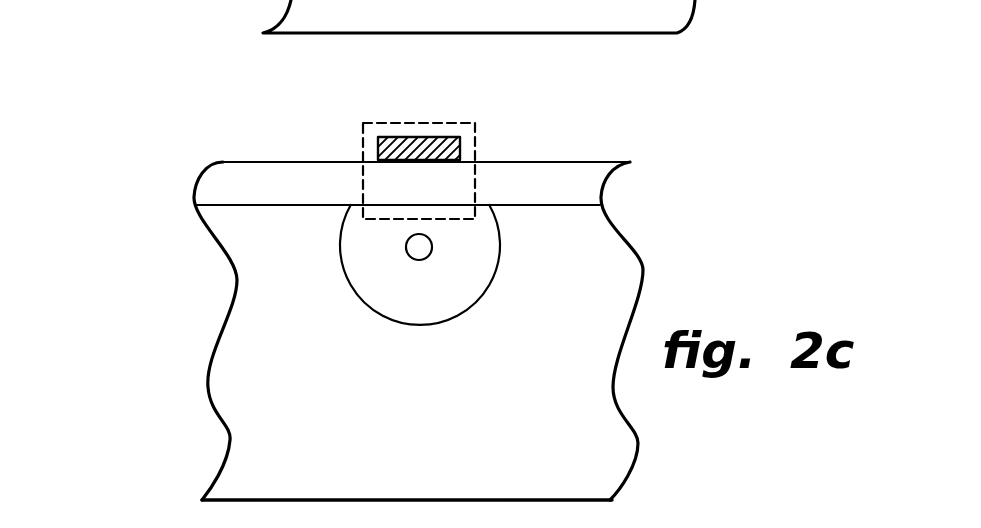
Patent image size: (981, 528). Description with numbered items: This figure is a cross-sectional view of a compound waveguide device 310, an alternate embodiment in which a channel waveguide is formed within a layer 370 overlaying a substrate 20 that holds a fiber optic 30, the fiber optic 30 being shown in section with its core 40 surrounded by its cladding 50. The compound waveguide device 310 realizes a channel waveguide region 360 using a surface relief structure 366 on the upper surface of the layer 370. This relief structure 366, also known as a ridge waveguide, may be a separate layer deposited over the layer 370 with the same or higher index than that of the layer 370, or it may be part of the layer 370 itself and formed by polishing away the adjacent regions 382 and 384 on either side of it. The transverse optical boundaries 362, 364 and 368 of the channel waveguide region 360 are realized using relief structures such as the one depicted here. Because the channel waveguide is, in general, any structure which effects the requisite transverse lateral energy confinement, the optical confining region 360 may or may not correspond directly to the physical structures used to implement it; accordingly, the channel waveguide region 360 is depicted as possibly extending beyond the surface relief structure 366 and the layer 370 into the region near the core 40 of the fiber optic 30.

The substrate 20 is at (438, 415).
The optical fiber 30 is at (490, 289).
The fiber core 40 is at (430, 240).
The fiber cladding 50 is at (436, 301).
The compound waveguide device 310 is at (167, 255).
The channel waveguide region 360 is at (385, 122).
The transverse optical boundary 362 is at (361, 177).
The transverse optical boundary 364 is at (480, 171).
The surface relief structure 366 is at (445, 136).
The transverse optical boundary 368 is at (401, 221).
The layer 370 is at (645, 183).
The adjacent region 382 is at (221, 135).
The adjacent region 384 is at (623, 134).